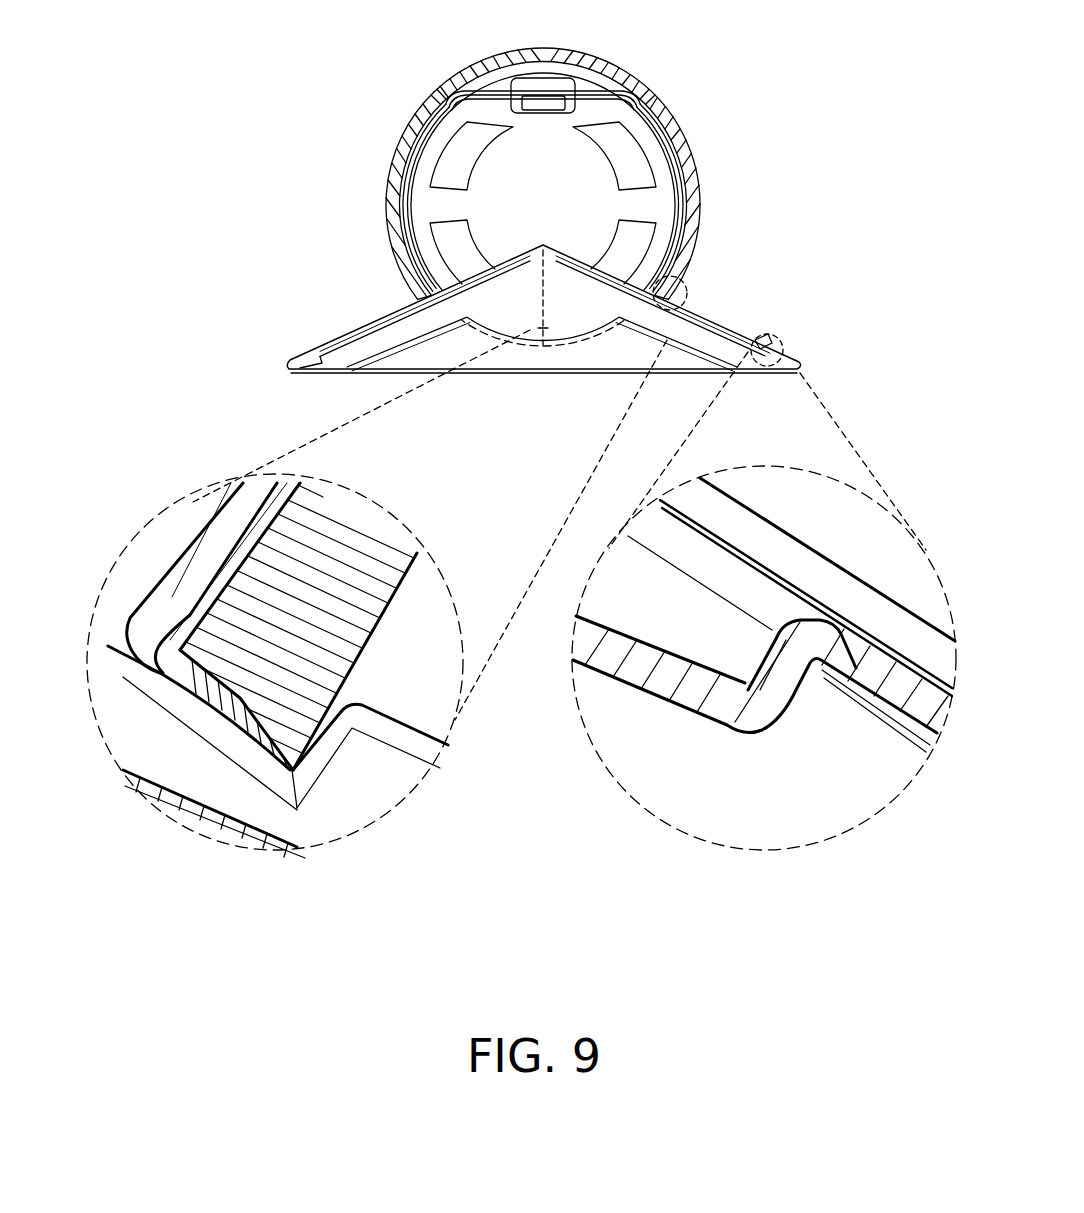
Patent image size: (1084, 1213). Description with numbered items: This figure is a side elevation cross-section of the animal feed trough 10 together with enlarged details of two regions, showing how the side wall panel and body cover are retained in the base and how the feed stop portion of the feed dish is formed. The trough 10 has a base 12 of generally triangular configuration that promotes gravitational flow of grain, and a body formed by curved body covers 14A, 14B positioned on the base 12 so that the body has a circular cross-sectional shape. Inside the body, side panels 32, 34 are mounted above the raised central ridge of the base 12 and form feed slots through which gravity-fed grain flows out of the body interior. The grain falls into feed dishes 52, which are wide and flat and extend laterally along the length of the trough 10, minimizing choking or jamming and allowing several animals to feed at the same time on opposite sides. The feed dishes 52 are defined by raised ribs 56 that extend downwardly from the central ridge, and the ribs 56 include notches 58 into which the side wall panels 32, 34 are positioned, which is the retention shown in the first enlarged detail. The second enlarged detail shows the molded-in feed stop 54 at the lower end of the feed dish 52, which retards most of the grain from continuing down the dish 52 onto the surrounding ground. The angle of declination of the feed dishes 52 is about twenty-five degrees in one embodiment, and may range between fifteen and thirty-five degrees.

The animal feed trough 10 is at (360, 95).
The base 12 is at (175, 768).
The curved body cover 14A is at (700, 198).
The curved body cover 14B is at (400, 243).
The side panel 32 is at (665, 152).
The side panel 34 is at (400, 183).
The feed dish 52 is at (678, 652).
The feed stop 54 is at (840, 673).
The raised rib 56 is at (395, 737).
The notch 58 is at (150, 673).